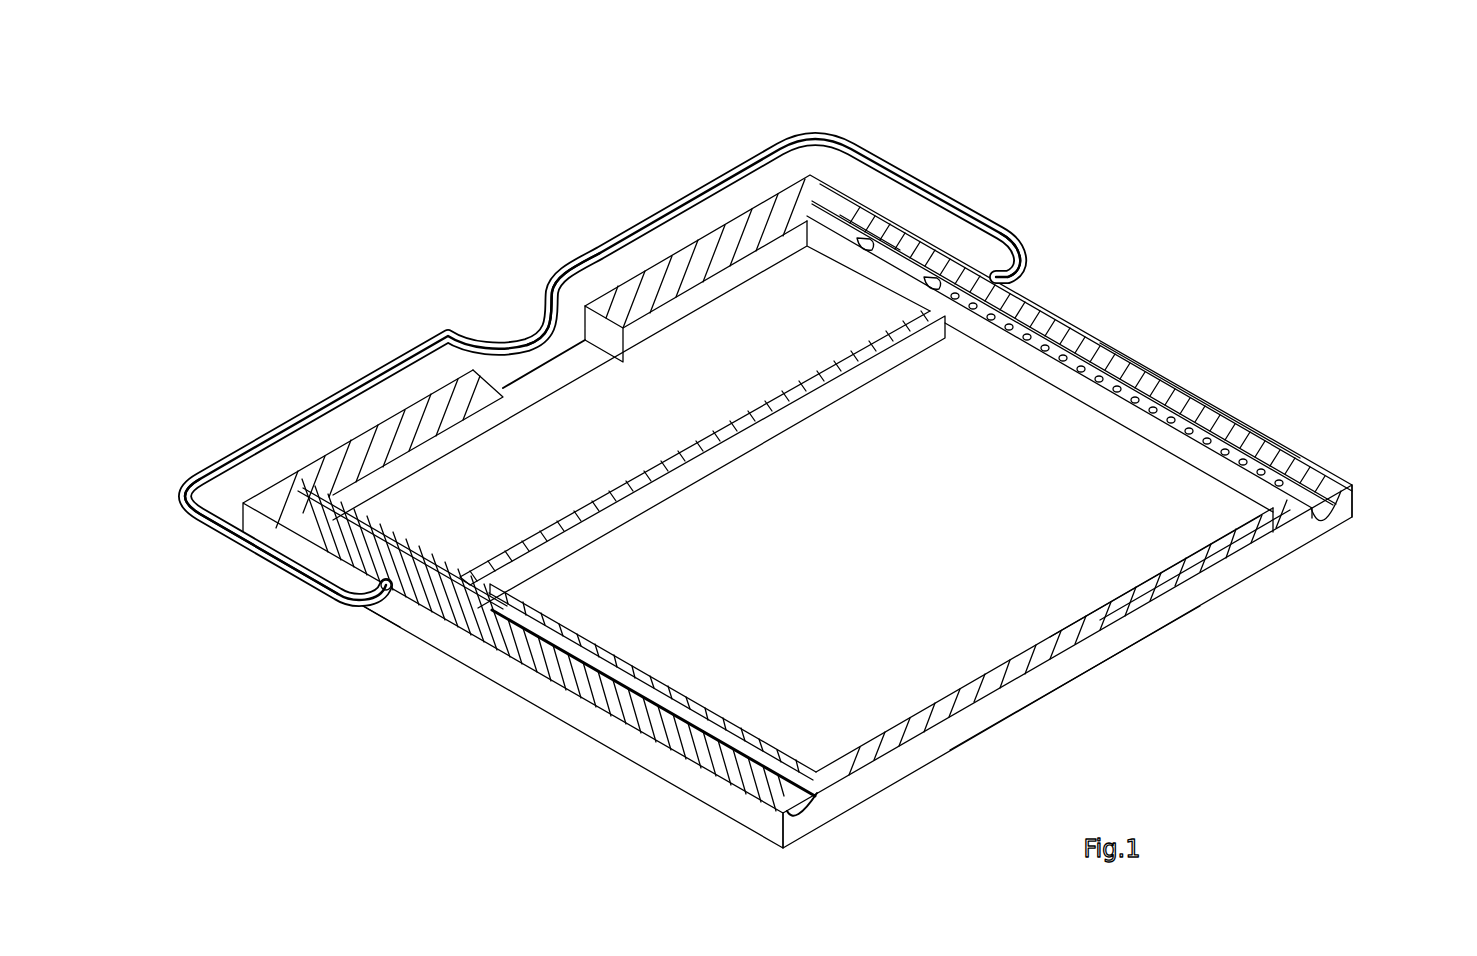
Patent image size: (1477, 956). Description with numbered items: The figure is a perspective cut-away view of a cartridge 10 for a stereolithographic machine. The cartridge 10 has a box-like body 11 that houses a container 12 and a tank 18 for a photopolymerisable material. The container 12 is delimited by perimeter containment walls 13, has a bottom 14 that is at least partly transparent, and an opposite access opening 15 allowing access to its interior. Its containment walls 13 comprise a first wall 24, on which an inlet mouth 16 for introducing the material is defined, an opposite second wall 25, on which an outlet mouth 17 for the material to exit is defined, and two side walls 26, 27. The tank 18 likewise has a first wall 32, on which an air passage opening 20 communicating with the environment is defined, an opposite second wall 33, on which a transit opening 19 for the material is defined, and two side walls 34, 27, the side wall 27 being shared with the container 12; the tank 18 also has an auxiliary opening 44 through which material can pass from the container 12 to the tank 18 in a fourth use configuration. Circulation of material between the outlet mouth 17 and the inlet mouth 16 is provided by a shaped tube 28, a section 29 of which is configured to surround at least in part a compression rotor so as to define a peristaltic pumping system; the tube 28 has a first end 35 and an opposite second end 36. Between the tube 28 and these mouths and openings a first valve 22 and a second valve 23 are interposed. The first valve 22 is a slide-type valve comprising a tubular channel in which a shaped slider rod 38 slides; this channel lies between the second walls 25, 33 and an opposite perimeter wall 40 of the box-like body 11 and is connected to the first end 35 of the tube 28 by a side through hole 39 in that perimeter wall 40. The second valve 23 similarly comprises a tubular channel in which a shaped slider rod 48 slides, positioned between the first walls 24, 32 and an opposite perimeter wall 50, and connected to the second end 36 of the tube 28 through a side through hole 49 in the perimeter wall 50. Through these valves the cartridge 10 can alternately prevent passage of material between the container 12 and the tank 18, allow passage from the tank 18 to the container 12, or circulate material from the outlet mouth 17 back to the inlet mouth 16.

The cartridge 10 is at (783, 475).
The box-like body 11 is at (853, 524).
The container 12 is at (1056, 433).
The containment walls 13 is at (1158, 596).
The bottom 14 is at (1160, 520).
The access opening 15 is at (1030, 673).
The inlet mouth 16 is at (1123, 323).
The outlet mouth 17 is at (376, 615).
The tank 18 is at (631, 370).
The transit opening 19 is at (355, 530).
The air passage opening 20 is at (868, 238).
The first valve 22 is at (830, 812).
The second valve 23 is at (1368, 478).
The first wall 24 is at (1215, 463).
The second wall 25 is at (653, 722).
The side wall 26 is at (1095, 643).
The side wall 27 is at (612, 518).
The shaped tube 28 is at (633, 355).
The section 29 is at (549, 318).
The first wall 32 is at (875, 270).
The second wall 33 is at (355, 554).
The side wall 34 is at (372, 440).
The first end 35 is at (320, 592).
The second end 36 is at (1030, 258).
The shaped slider rod 38 is at (757, 780).
The side through hole 39 is at (373, 598).
The perimeter wall 40 is at (452, 642).
The auxiliary opening 44 is at (935, 281).
The shaped slider rod 48 is at (1332, 478).
The side through hole 49 is at (1013, 283).
The perimeter wall 50 is at (1150, 385).